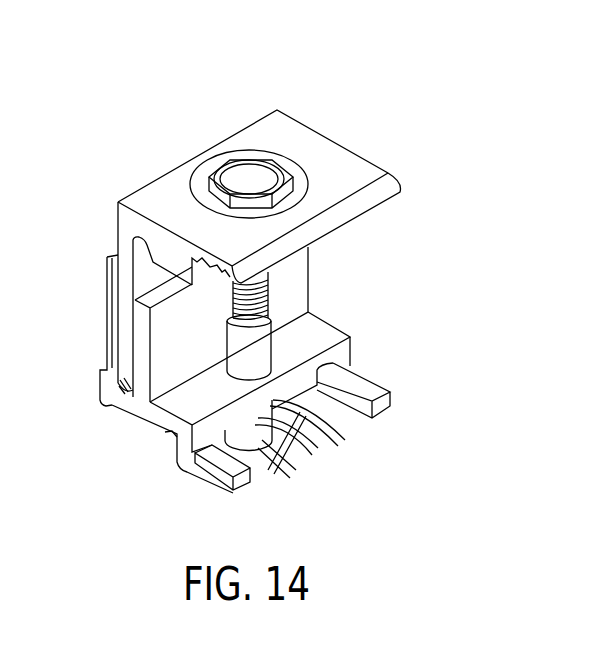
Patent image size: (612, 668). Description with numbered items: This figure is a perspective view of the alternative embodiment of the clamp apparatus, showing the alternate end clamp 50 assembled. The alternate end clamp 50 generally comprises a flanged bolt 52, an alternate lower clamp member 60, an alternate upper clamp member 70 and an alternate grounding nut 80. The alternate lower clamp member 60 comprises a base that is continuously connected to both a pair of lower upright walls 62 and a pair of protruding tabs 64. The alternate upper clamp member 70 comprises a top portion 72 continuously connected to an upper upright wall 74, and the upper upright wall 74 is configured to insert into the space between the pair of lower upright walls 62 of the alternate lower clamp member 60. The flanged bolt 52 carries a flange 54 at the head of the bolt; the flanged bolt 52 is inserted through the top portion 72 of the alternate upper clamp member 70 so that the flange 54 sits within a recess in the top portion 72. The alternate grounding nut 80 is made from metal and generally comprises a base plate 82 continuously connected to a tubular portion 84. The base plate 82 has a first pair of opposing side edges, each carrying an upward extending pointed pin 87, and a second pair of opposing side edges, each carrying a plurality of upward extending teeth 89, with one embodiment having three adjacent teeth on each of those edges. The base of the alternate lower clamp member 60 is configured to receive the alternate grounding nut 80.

The alternate end clamp 50 is at (132, 465).
The flanged bolt 52 is at (275, 292).
The flange 54 is at (288, 190).
The alternate lower clamp member 60 is at (90, 368).
The lower upright walls 62 is at (140, 362).
The protruding tabs 64 is at (387, 403).
The alternate upper clamp member 70 is at (133, 170).
The top portion 72 is at (347, 162).
The upper upright wall 74 is at (125, 250).
The alternate grounding nut 80 is at (307, 477).
The base plate 82 is at (258, 470).
The tubular portion 84 is at (253, 355).
The pointed pin 87 is at (312, 452).
The teeth 89 is at (188, 472).